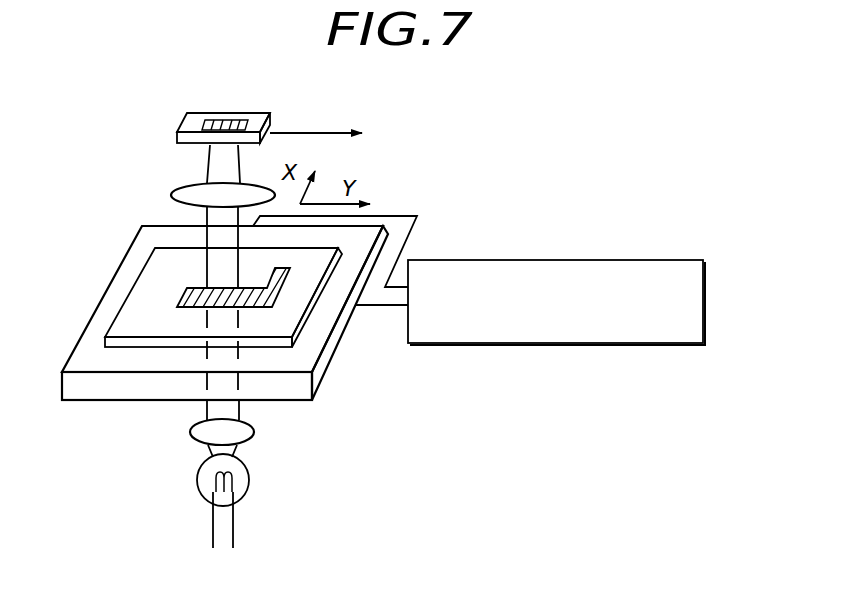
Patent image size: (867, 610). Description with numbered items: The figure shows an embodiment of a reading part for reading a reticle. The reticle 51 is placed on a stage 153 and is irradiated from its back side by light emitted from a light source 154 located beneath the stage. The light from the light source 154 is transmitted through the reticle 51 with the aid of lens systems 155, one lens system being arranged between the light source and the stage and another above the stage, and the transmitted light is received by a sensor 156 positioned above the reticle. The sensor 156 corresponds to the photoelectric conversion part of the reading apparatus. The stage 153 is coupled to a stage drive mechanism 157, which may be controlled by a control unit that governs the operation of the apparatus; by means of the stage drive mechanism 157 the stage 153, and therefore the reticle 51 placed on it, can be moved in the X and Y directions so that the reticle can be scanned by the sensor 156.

The sensor 156 is at (235, 111).
The lens systems 155 is at (172, 190).
The reticle 51 is at (298, 310).
The stage 153 is at (322, 373).
The light source 154 is at (250, 488).
The stage drive mechanism 157 is at (531, 258).